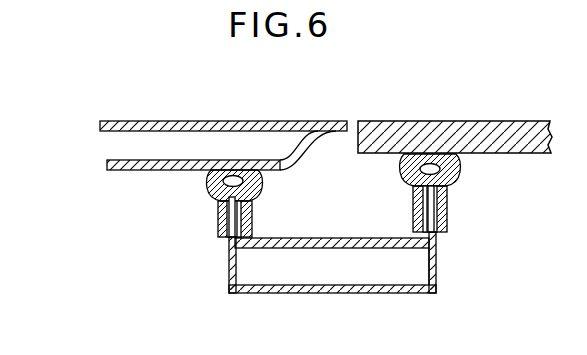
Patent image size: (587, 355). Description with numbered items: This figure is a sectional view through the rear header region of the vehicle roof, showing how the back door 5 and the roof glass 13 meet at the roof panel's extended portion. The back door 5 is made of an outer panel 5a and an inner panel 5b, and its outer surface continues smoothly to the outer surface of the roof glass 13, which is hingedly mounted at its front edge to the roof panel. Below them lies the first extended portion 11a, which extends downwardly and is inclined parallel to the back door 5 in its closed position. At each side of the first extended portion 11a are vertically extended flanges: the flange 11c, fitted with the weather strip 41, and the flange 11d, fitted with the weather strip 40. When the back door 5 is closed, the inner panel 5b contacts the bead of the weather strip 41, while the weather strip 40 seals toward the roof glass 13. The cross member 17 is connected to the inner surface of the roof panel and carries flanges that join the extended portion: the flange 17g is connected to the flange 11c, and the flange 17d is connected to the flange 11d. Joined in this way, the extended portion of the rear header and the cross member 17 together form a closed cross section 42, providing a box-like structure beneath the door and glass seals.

The back door 5 is at (125, 144).
The outer panel 5a is at (152, 121).
The inner panel 5b is at (114, 171).
The first extended portion 11a is at (335, 238).
The flange 11c is at (232, 237).
The flange 11d is at (440, 222).
The roof glass 13 is at (487, 121).
The cross member 17 is at (331, 294).
The flange 17d is at (437, 278).
The flange 17g is at (230, 276).
The weather strip 40 is at (456, 176).
The weather strip 41 is at (212, 184).
The closed cross section 42 is at (420, 262).